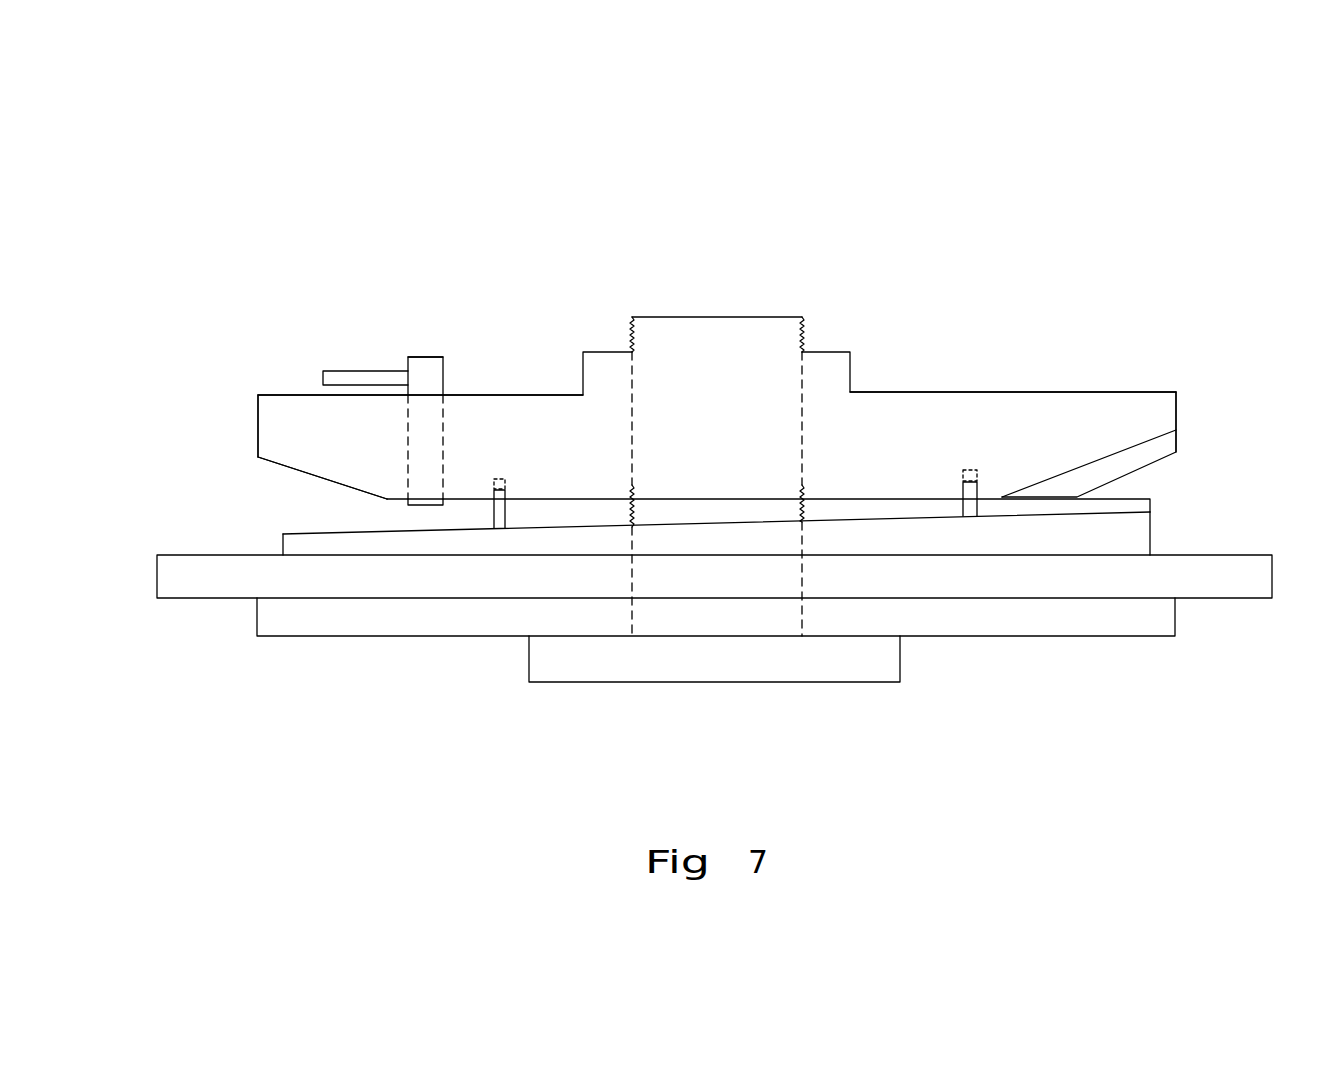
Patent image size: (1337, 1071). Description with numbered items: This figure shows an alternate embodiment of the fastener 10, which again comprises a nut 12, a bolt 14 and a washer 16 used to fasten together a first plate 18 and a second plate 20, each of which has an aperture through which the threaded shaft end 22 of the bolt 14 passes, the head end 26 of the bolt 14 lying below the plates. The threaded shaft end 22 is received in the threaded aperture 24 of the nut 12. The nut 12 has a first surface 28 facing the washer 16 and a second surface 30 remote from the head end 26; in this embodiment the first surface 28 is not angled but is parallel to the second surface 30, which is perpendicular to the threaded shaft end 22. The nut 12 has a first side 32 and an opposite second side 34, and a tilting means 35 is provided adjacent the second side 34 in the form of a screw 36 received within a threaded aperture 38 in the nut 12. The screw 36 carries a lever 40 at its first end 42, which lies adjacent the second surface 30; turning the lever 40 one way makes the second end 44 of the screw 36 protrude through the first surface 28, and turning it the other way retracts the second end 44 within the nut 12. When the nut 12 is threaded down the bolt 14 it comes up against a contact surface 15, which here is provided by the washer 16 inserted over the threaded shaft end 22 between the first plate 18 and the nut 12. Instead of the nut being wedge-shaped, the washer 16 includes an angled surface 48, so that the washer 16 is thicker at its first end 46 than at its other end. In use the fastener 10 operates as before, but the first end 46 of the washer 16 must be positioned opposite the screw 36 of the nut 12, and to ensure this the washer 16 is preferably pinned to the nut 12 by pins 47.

The fastener 10 is at (1053, 186).
The nut 12 is at (980, 405).
The bolt 14 is at (662, 520).
The contact surface 15 is at (1062, 530).
The washer 16 is at (1125, 542).
The first plate 18 is at (205, 590).
The second plate 20 is at (337, 618).
The threaded shaft end 22 is at (630, 337).
The threaded aperture 24 is at (802, 398).
The head end 26 is at (868, 655).
The first surface 28 is at (1176, 430).
The second surface 30 is at (1092, 390).
The first side 32 is at (1178, 385).
The second side 34 is at (255, 395).
The tilting means 35 is at (370, 332).
The screw 36 is at (415, 372).
The threaded aperture 38 is at (442, 437).
The lever 40 is at (323, 367).
The first end 42 is at (443, 352).
The second end 44 is at (387, 505).
The first end 46 is at (1150, 510).
The pins 47 is at (507, 492).
The angled surface 48 is at (290, 533).